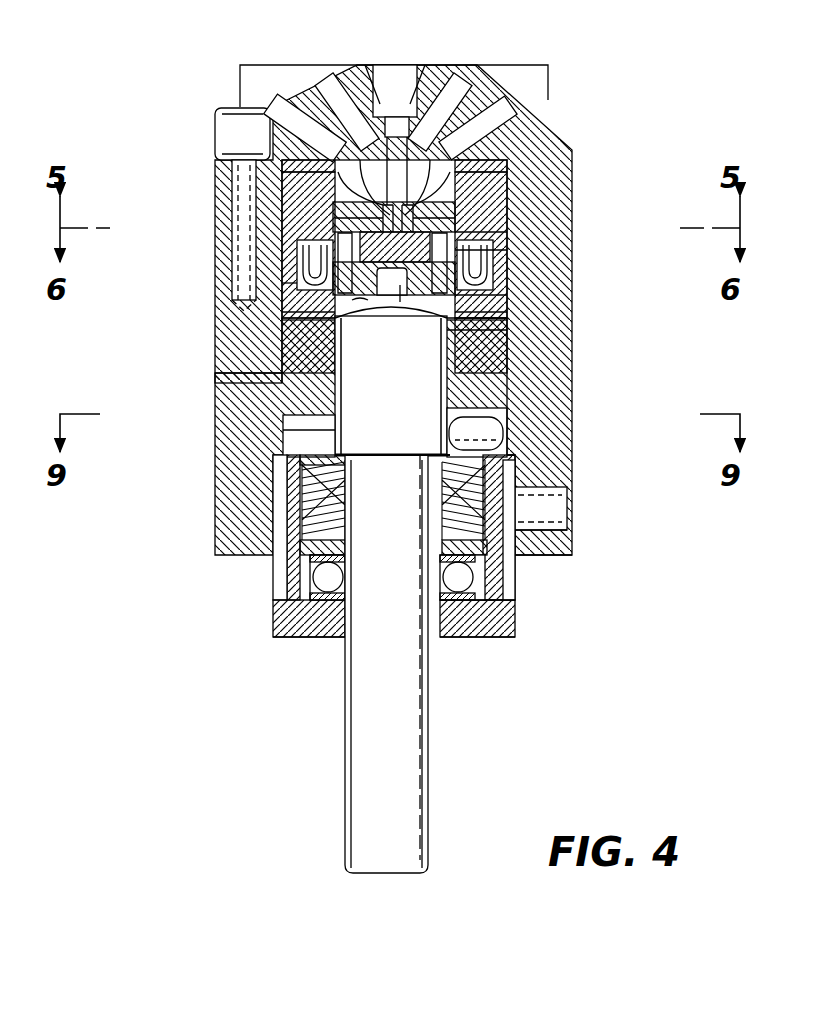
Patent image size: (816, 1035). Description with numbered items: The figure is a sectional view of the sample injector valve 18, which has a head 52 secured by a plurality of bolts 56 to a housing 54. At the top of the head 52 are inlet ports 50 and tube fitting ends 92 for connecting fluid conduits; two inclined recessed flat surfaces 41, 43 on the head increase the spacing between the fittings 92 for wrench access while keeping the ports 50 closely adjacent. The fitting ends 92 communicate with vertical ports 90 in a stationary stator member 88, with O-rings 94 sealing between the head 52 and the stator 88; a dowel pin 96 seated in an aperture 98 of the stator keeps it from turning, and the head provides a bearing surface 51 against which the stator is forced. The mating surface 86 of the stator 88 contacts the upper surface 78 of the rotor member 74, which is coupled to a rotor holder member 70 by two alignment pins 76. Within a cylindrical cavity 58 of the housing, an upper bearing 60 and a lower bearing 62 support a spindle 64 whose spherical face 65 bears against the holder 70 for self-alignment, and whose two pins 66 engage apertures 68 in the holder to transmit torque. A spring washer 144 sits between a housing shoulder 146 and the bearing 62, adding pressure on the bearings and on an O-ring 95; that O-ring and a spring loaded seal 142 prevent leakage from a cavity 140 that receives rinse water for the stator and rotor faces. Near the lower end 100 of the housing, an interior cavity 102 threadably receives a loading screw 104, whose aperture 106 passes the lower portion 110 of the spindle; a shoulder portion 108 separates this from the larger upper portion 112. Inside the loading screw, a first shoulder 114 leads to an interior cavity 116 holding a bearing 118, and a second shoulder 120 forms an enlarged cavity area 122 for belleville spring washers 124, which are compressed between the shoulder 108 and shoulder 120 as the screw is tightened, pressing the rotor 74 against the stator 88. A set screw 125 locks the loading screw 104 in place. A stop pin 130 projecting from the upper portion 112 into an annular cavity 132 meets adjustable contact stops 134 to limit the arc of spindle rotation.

The valve 18 is at (178, 68).
The recessed flat surface 41 is at (540, 107).
The recessed flat surface 43 is at (362, 92).
The inlet port 50 is at (452, 96).
The bearing surface 51 is at (380, 70).
The head 52 is at (525, 80).
The housing 54 is at (355, 396).
The bolt 56 is at (228, 126).
The cylindrical cavity 58 is at (245, 340).
The upper bearing 60 is at (462, 262).
The lower bearing 62 is at (460, 322).
The spindle 64 is at (432, 693).
The spherical face 65 is at (401, 312).
The pin 66 is at (376, 308).
The aperture 68 is at (465, 296).
The rotor holder member 70 is at (305, 256).
The rotor member 74 is at (330, 224).
The alignment pin 76 is at (290, 312).
The upper surface 78 is at (298, 112).
The mating surface 86 is at (470, 268).
The stator member 88 is at (335, 200).
The port 90 is at (415, 208).
The fitting end 92 is at (338, 100).
The O-ring 94 is at (440, 165).
The O-ring 95 is at (430, 185).
The dowel pin 96 is at (455, 218).
The aperture 98 is at (480, 246).
The lower end 100 is at (240, 570).
The interior cavity 102 is at (290, 468).
The loading screw 104 is at (300, 642).
The aperture 106 is at (452, 612).
The shoulder portion 108 is at (440, 452).
The lower portion 110 is at (430, 742).
The upper portion 112 is at (300, 430).
The first shoulder 114 is at (470, 600).
The interior cavity 116 is at (470, 545).
The bearing 118 is at (475, 520).
The second shoulder 120 is at (468, 578).
The enlarged cavity area 122 is at (515, 556).
The spring washer 124 is at (545, 510).
The set screw 125 is at (540, 528).
The stop pin 130 is at (512, 455).
The annular cavity 132 is at (295, 446).
The contact stop 134 is at (500, 433).
The cavity 140 is at (290, 170).
The spring loaded seal 142 is at (290, 283).
The spring washer 144 is at (505, 412).
The shoulder 146 is at (280, 376).